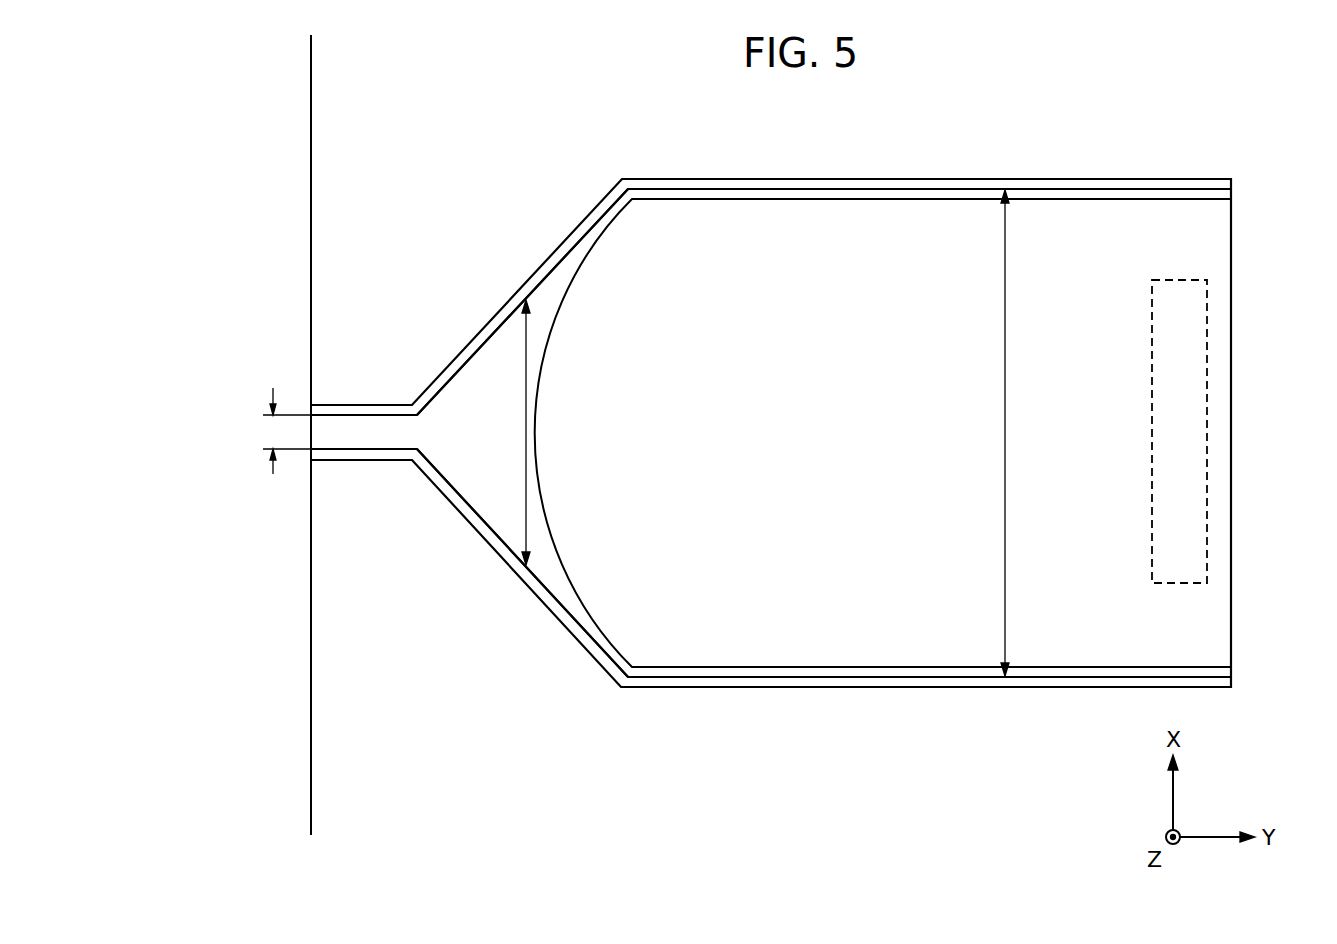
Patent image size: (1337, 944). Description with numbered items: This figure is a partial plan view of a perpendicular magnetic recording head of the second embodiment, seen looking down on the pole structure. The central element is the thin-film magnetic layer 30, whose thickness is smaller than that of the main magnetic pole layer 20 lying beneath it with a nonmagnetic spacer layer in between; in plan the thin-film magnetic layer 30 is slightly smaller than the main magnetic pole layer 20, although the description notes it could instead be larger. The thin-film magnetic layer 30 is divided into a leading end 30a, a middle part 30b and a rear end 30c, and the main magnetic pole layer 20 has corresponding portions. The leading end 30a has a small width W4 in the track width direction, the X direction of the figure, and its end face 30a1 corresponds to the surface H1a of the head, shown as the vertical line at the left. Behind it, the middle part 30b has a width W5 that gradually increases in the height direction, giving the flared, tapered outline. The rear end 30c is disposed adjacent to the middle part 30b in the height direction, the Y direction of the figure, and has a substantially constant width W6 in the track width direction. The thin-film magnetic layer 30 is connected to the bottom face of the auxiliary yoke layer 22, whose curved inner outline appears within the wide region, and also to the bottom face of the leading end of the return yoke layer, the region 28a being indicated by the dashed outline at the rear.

The main magnetic pole layer 20 is at (571, 636).
The auxiliary yoke layer 22 is at (742, 668).
The element (dashed) 28a is at (1192, 347).
The thin-film magnetic layer 30 is at (900, 188).
The leading end 30a is at (345, 445).
The end face 30a1 is at (309, 421).
The middle part 30b is at (496, 492).
The rear end 30c is at (912, 641).
The surface H1a is at (308, 604).
The width of the leading end W4 is at (269, 431).
The width of the middle part W5 is at (525, 383).
The width of the rear end W6 is at (1032, 608).